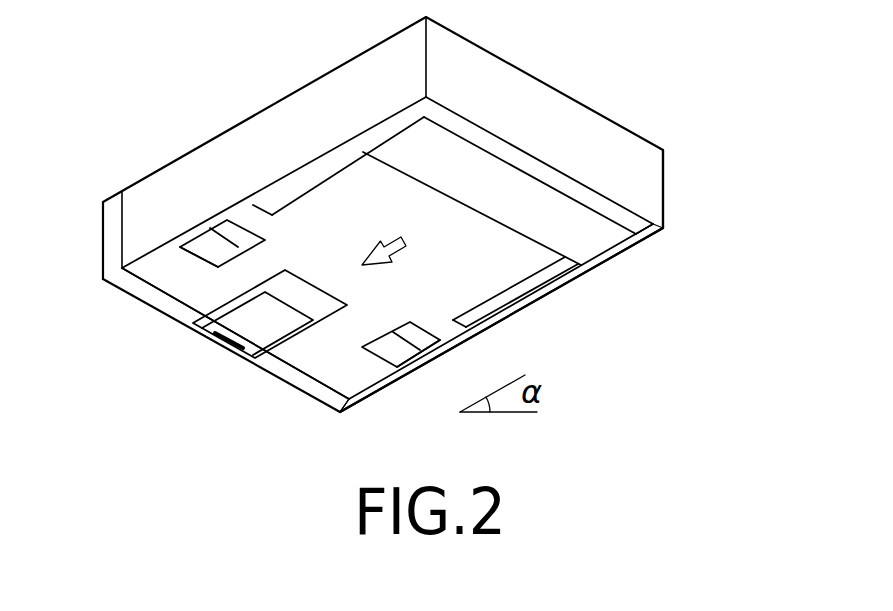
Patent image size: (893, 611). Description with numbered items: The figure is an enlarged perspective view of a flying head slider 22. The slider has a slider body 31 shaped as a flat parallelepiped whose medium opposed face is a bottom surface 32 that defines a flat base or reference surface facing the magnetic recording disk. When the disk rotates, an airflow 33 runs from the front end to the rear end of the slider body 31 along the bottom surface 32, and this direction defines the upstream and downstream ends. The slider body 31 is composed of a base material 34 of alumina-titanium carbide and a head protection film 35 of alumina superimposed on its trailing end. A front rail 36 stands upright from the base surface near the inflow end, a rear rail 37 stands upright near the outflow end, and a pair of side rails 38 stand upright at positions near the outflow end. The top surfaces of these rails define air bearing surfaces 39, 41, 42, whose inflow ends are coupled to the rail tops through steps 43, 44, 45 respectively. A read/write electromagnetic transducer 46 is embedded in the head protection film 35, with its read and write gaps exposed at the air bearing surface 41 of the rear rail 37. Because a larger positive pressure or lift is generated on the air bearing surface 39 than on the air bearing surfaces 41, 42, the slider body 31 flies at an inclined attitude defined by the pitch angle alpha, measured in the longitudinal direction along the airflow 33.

The flying head slider 22 is at (256, 114).
The slider body 31 is at (565, 287).
The bottom surface 32 is at (347, 252).
The airflow 33 is at (398, 240).
The base material 34 is at (381, 386).
The head protection film 35 is at (342, 409).
The front rail 36 is at (633, 211).
The rear rail 37 is at (293, 345).
The side rail 38 is at (190, 237).
The air bearing surface 39 is at (489, 202).
The air bearing surface 41 is at (233, 312).
The air bearing surface 42 is at (210, 240).
The step 43 is at (522, 168).
The step 44 is at (305, 312).
The step 45 is at (232, 238).
The read/write electromagnetic transducer 46 is at (222, 342).